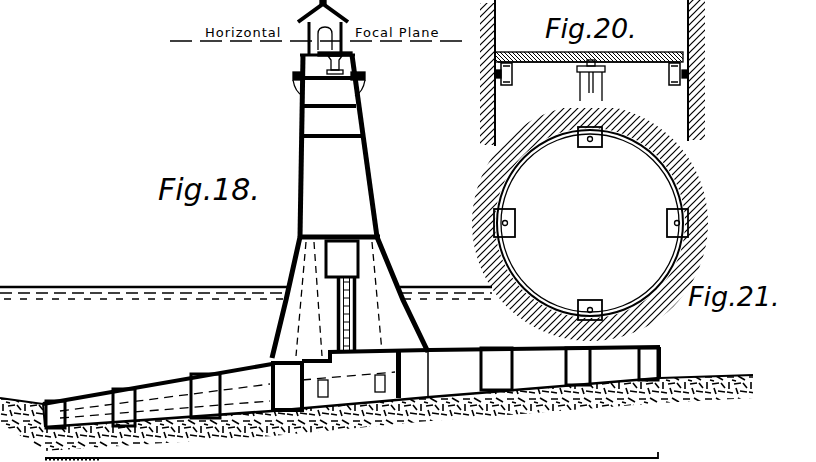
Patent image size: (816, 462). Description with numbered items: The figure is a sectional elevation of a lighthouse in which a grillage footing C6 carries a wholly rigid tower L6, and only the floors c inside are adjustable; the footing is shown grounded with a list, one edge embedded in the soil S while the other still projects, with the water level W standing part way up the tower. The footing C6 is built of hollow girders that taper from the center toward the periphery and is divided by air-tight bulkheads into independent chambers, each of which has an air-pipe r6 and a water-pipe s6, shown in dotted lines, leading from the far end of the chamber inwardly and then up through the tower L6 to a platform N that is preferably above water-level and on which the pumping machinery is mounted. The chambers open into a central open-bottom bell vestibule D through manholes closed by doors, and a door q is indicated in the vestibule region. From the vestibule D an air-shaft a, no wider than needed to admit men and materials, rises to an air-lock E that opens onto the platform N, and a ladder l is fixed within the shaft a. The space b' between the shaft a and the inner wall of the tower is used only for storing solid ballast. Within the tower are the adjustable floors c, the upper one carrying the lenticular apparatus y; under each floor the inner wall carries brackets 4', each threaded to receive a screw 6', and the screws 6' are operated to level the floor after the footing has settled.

In FIG. 18, the lenticular apparatus y is at (334, 44).
In FIG. 18, the adjustable floors c is at (336, 104).
In FIG. 20, the adjustable floors c is at (528, 51).
In FIG. 21, the adjustable floors c is at (590, 223).
In FIG. 18, the tower L6 is at (353, 157).
In FIG. 18, the platform N is at (364, 233).
In FIG. 18, the air-pipe r6 is at (299, 238).
In FIG. 18, the water-pipe s6 is at (313, 233).
In FIG. 18, the air-lock E is at (342, 259).
In FIG. 18, the air-shaft a is at (347, 333).
In FIG. 18, the space b' is at (397, 297).
In FIG. 18, the water W is at (246, 307).
In FIG. 18, the footing C6 is at (162, 400).
In FIG. 18, the ladder l is at (356, 378).
In FIG. 18, the bell vestibule D is at (362, 379).
In FIG. 18, the connection q is at (380, 395).
In FIG. 18, the ground / sea bed S is at (704, 400).
In FIG. 20, the screw 6' is at (591, 80).
In FIG. 20, the brackets 4' is at (592, 85).
In FIG. 21, the brackets 4' is at (591, 223).